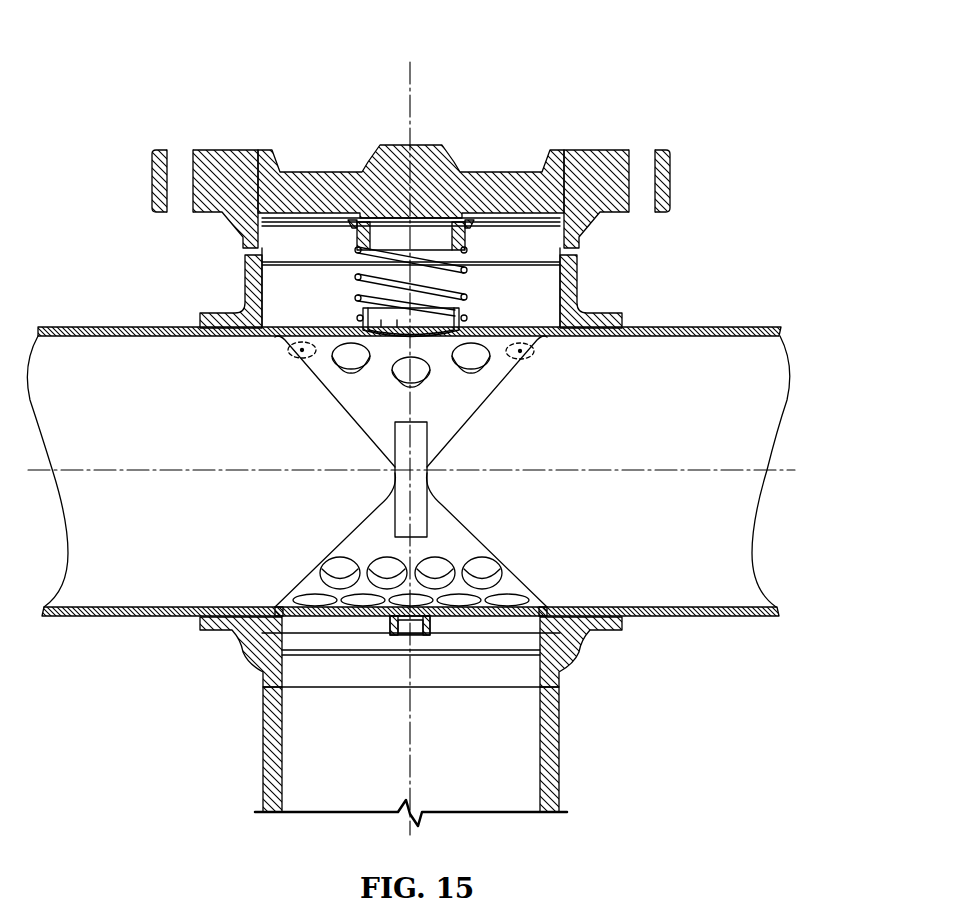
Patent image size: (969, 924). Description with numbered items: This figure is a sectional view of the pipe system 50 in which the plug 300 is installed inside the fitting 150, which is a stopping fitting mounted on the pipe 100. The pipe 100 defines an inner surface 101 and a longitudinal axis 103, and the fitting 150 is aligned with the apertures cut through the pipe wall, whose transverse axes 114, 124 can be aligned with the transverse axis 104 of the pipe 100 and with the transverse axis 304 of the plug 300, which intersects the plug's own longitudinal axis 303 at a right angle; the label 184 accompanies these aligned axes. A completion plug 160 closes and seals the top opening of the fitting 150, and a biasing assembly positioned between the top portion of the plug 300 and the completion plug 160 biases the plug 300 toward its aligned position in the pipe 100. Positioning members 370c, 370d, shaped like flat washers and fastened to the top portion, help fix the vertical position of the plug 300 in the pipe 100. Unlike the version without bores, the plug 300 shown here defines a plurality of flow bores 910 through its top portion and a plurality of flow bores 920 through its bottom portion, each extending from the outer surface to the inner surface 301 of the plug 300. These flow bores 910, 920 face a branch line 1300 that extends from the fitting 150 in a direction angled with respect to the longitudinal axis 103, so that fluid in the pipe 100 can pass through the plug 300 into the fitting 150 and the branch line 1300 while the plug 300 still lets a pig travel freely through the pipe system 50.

The pipe system 50 is at (210, 64).
The completion plug 160 is at (321, 150).
The transverse axis 104 is at (461, 203).
The transverse axis 114 is at (461, 203).
The transverse axis 124 is at (461, 203).
The transverse axis 304 is at (461, 203).
The cap body 184 is at (321, 172).
The fitting 150 is at (578, 292).
The pipe 100 is at (446, 501).
The inner surface 101 is at (108, 605).
The longitudinal axis 103 is at (808, 471).
The longitudinal axis 303 is at (775, 472).
The plug 300 is at (411, 436).
The inner surface 301 is at (427, 554).
The positioning member 370c is at (292, 347).
The positioning member 370d is at (530, 352).
The flow bores 910 is at (471, 368).
The flow bores 920 is at (488, 560).
The branch line 1300 is at (552, 789).